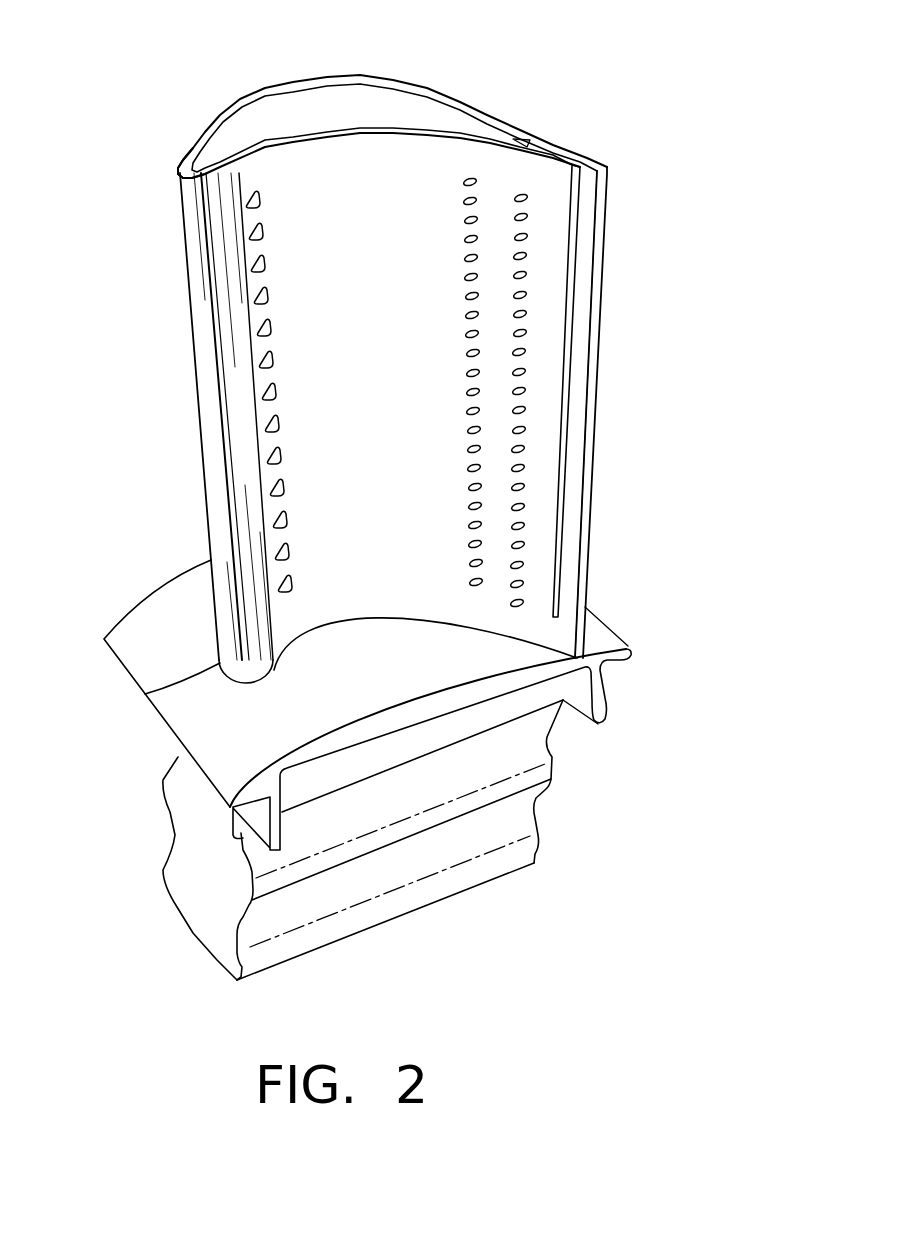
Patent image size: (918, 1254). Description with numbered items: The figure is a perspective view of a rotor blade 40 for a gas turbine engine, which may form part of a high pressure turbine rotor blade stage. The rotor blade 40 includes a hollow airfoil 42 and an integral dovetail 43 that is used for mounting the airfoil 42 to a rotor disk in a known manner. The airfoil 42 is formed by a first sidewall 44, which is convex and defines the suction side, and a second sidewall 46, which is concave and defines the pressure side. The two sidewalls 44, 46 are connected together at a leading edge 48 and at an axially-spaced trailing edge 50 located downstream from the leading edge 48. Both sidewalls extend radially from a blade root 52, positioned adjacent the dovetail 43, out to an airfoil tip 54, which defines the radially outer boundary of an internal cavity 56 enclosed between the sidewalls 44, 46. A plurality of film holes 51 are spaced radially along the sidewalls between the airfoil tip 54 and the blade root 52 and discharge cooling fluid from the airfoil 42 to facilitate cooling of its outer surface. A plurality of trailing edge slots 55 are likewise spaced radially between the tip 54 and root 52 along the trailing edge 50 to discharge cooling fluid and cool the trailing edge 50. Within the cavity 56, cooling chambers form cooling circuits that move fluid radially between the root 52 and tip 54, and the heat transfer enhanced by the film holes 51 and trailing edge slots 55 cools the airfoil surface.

The rotor blade 40 is at (664, 320).
The hollow airfoil 42 is at (196, 379).
The dovetail 43 is at (187, 841).
The first sidewall 44 is at (598, 392).
The second sidewall 46 is at (392, 190).
The leading edge 48 is at (162, 178).
The trailing edge 50 is at (609, 176).
The film holes 51 is at (278, 383).
The blade root 52 is at (143, 696).
The airfoil tip 54 is at (278, 117).
The trailing edge slots 55 is at (456, 380).
The internal cavity 56 is at (478, 131).